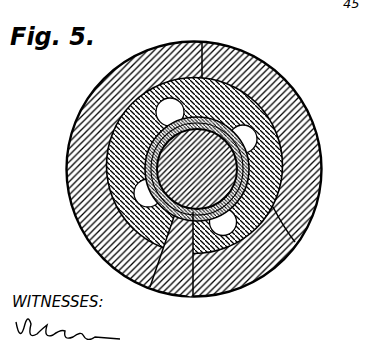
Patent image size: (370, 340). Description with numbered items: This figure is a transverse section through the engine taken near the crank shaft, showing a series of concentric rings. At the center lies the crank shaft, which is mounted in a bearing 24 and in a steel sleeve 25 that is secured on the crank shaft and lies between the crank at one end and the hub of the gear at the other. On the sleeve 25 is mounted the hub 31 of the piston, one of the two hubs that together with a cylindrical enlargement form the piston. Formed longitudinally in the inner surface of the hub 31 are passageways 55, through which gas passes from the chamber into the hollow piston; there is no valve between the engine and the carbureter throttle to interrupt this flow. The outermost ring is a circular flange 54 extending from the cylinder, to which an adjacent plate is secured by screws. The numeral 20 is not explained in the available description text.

The circular flange 54 is at (173, 42).
The steel sleeve 25 is at (253, 98).
The key 20 is at (152, 287).
The passageways 55 is at (260, 137).
The bearing 24 is at (205, 296).
The hub of the piston 31 is at (295, 242).